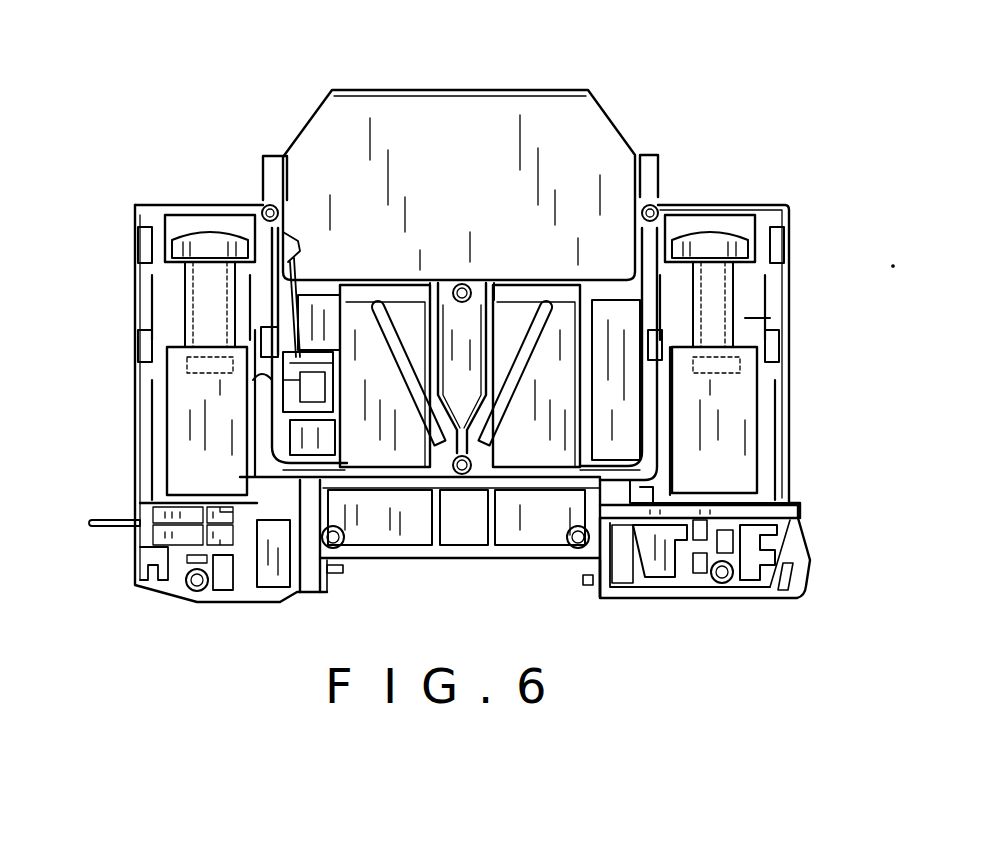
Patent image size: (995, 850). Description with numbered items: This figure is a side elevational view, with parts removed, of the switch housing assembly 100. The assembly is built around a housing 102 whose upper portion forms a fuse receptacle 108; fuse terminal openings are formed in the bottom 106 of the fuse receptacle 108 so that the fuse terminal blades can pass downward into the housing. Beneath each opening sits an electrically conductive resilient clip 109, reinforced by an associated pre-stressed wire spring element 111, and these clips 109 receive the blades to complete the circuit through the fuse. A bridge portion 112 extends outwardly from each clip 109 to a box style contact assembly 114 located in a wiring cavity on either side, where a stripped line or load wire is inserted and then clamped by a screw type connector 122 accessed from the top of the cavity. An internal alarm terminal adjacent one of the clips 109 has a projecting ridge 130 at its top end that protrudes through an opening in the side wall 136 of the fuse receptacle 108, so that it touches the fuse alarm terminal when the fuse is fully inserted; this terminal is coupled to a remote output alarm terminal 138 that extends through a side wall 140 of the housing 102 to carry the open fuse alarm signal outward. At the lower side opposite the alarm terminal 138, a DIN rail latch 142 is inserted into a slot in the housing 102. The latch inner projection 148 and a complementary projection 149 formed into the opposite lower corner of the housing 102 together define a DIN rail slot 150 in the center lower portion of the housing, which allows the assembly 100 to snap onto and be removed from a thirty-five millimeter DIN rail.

The switch housing assembly 100 is at (676, 112).
The housing 102 is at (788, 198).
The bottom 106 is at (447, 278).
The fuse receptacle 108 is at (531, 143).
The electrically conductive resilient clip 109 is at (410, 298).
The wire spring element 111 is at (390, 350).
The bridge portion 112 is at (327, 467).
The box style contact assembly 114 is at (185, 420).
The screw type connector 122 is at (207, 245).
The projecting ridge 130 is at (300, 242).
The side wall 136 is at (283, 158).
The remote output alarm terminal 138 is at (107, 530).
The side wall 140 is at (140, 470).
The DIN rail latch 142 is at (805, 524).
The latch inner projection 148 is at (600, 600).
The complementary projection 149 is at (337, 592).
The DIN rail slot 150 is at (343, 567).